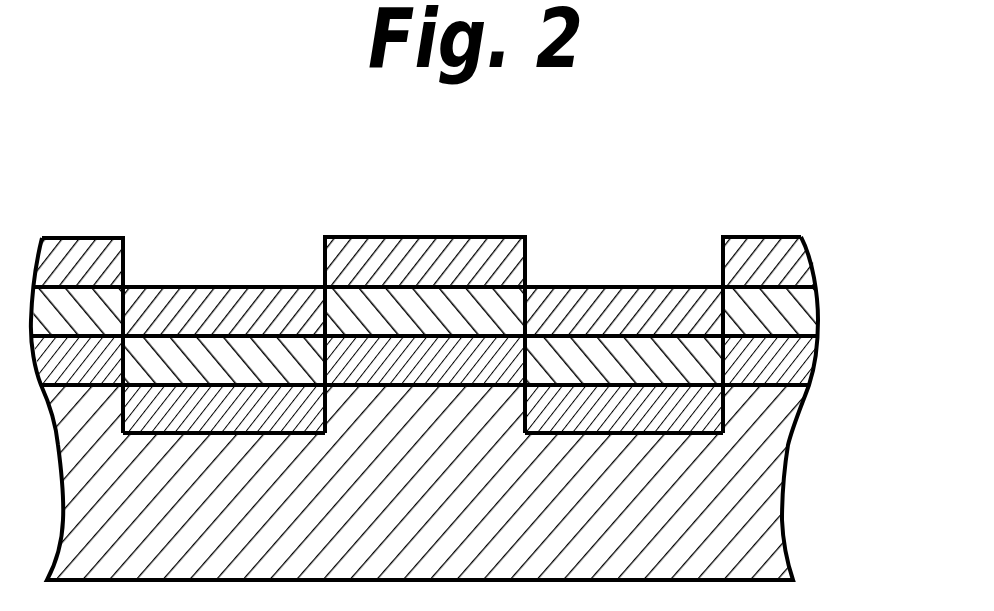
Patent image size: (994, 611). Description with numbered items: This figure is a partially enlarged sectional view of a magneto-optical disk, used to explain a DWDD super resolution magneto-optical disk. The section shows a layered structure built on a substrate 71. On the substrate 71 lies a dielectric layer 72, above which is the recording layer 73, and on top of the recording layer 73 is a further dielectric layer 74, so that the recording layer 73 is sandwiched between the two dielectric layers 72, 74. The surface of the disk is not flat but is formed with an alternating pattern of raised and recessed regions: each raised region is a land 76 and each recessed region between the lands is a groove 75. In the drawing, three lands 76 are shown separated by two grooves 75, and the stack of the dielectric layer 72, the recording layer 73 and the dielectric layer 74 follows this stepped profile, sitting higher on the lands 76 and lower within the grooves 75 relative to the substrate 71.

The substrate 71 is at (783, 480).
The dielectric layer 72 is at (815, 358).
The recording layer 73 is at (818, 310).
The dielectric layer 74 is at (813, 260).
The groove 75 is at (220, 287).
The land 76 is at (78, 237).